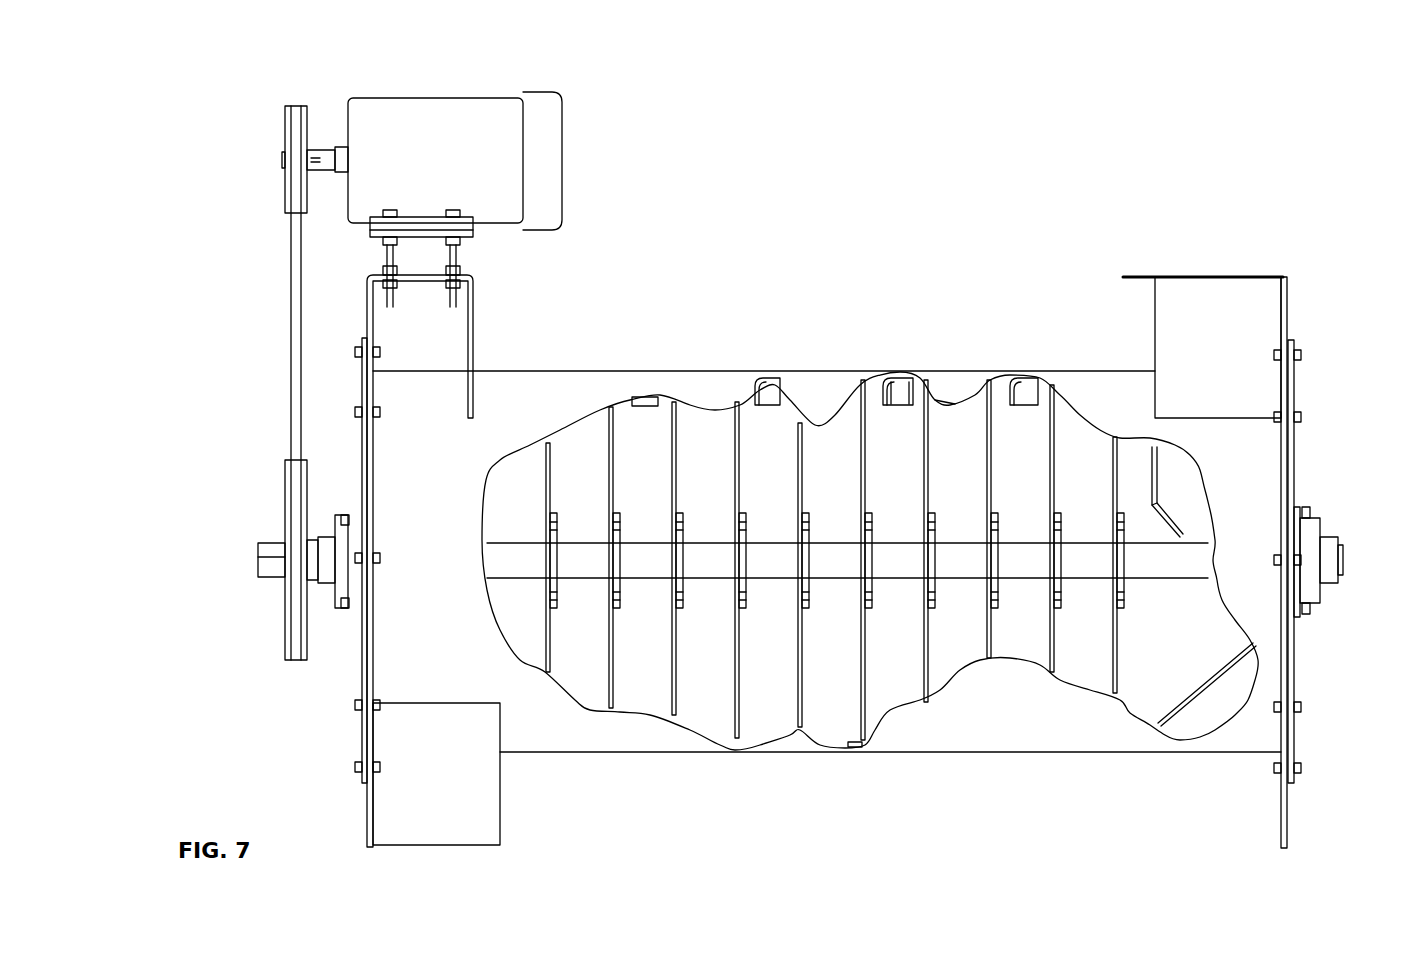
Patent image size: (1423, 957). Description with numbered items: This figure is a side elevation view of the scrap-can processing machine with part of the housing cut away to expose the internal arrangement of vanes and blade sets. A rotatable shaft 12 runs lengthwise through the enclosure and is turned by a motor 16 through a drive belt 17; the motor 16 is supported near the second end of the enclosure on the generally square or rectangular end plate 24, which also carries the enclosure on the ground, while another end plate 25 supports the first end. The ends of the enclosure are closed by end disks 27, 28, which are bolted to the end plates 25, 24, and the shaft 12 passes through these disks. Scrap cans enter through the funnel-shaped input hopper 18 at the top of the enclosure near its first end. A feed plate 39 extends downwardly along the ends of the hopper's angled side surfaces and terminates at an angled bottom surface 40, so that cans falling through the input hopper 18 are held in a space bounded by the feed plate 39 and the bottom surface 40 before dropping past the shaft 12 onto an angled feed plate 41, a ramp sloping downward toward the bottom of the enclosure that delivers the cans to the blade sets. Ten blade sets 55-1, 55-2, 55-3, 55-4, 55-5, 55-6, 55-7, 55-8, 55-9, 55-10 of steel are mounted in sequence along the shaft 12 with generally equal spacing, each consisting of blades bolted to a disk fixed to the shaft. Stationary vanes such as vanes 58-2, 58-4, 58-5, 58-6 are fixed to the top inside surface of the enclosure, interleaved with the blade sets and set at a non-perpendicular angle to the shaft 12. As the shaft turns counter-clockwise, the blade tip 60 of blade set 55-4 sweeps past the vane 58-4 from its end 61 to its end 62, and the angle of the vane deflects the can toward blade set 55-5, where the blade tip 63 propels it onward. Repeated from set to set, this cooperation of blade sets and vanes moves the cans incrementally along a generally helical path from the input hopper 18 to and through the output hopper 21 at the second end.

The rotatable shaft 12 is at (258, 548).
The motor 16 is at (433, 98).
The drive belt 17 is at (290, 268).
The input hopper 18 is at (1215, 277).
The output hopper 21 is at (455, 845).
The end plate 24 is at (367, 302).
The end plate 25 is at (1287, 818).
The end disk 27 is at (1296, 663).
The end disk 28 is at (362, 728).
The feed plate 39 is at (1157, 475).
The angled bottom surface 40 is at (1160, 522).
The angled feed plate 41 is at (1190, 708).
The blade set 55-1 is at (1112, 650).
The blade set 55-2 is at (1050, 625).
The blade set 55-3 is at (987, 640).
The blade set 55-4 is at (925, 690).
The blade set 55-5 is at (862, 445).
The blade set 55-6 is at (800, 700).
The blade set 55-7 is at (740, 690).
The blade set 55-8 is at (677, 680).
The blade set 55-9 is at (612, 660).
The blade set 55-10 is at (545, 630).
The stationary vane 58-2 is at (1032, 395).
The stationary vane 58-4 is at (905, 395).
The stationary vane 58-5 is at (645, 397).
The stationary vane 58-6 is at (770, 395).
The blade tip 60 is at (947, 412).
The end of vane 61 is at (912, 400).
The end of vane 62 is at (890, 400).
The blade tip 63 is at (855, 740).